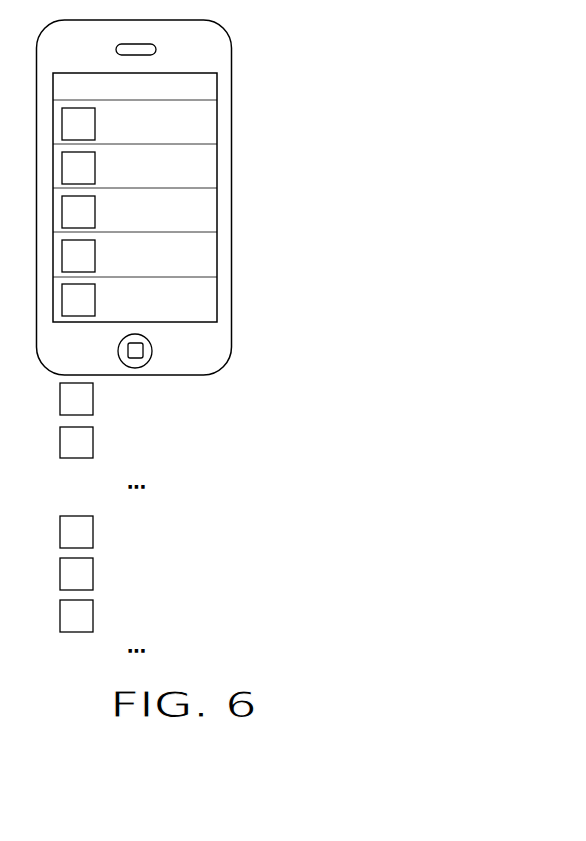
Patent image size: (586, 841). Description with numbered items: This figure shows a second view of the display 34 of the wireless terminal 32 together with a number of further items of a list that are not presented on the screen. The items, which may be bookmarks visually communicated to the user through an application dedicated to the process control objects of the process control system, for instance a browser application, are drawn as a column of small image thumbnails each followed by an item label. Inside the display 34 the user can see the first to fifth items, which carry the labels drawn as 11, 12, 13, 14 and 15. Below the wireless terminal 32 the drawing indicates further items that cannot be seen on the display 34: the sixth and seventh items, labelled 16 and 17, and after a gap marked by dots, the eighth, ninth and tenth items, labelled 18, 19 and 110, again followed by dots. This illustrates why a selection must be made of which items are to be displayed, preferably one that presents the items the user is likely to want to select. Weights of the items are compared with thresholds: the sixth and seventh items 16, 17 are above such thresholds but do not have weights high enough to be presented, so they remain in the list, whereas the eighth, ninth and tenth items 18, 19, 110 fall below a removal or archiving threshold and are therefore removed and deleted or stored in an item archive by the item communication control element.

The wireless terminal 32 is at (272, 265).
The display 34 is at (213, 127).
The image item I1 11 is at (106, 126).
The image item I2 12 is at (106, 170).
The image item I3 13 is at (106, 214).
The image item I4 14 is at (106, 258).
The image item I5 15 is at (106, 302).
The image item I6 16 is at (106, 401).
The image item I7 17 is at (106, 440).
The image item I8 18 is at (106, 534).
The item archive 19 is at (106, 576).
The image item I10 110 is at (116, 613).